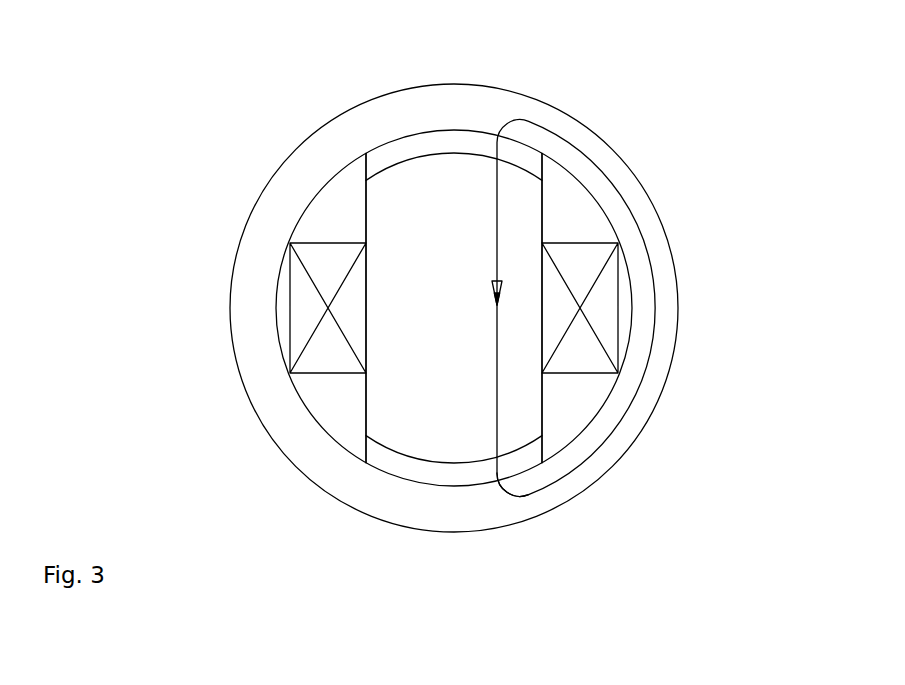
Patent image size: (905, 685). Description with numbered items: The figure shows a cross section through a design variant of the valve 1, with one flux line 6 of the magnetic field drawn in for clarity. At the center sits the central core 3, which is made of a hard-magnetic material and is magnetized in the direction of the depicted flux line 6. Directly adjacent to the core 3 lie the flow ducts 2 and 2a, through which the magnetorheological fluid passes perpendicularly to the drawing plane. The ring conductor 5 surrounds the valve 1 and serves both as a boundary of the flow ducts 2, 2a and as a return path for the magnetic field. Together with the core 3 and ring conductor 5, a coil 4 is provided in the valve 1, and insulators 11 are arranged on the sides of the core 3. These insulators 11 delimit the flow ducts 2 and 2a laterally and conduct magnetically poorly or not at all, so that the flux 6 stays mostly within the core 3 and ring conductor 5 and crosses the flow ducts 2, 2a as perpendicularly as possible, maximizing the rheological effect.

The valve 1 is at (210, 70).
The flow duct 2 is at (530, 158).
The flow duct 2a is at (512, 465).
The central core 3 is at (408, 440).
The coil 4 is at (610, 310).
The ring conductor 5 is at (655, 239).
The flux line 6 is at (653, 364).
The insulator 11 is at (323, 225).